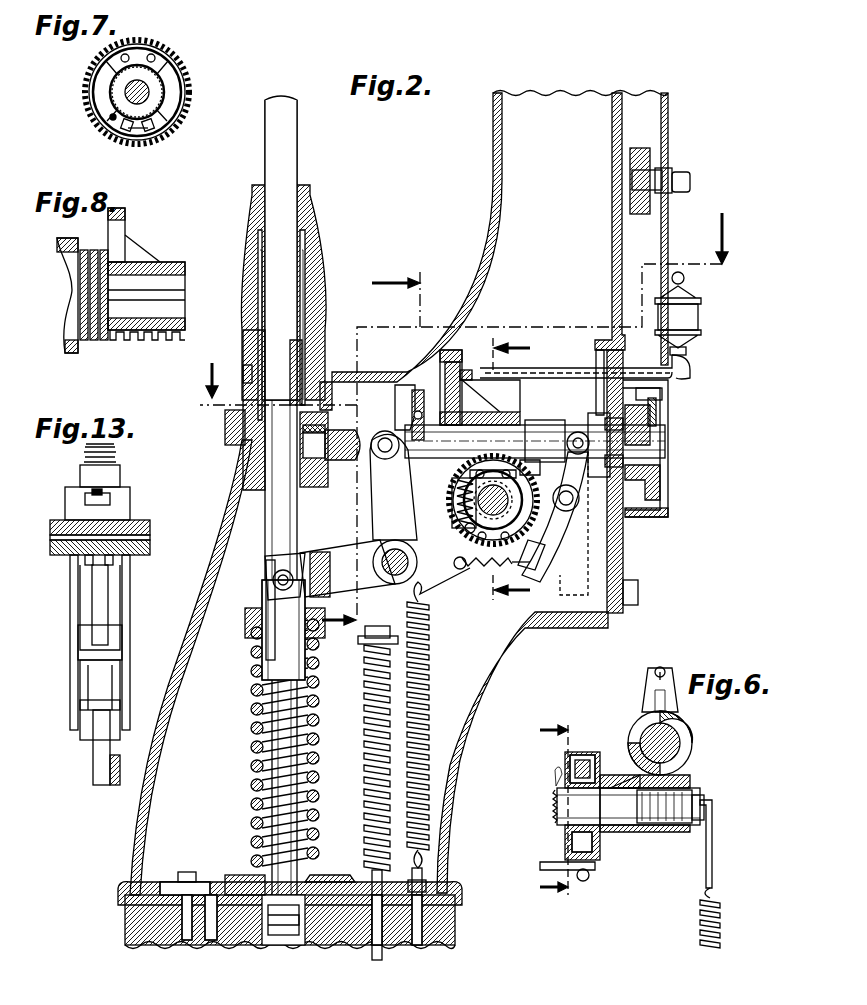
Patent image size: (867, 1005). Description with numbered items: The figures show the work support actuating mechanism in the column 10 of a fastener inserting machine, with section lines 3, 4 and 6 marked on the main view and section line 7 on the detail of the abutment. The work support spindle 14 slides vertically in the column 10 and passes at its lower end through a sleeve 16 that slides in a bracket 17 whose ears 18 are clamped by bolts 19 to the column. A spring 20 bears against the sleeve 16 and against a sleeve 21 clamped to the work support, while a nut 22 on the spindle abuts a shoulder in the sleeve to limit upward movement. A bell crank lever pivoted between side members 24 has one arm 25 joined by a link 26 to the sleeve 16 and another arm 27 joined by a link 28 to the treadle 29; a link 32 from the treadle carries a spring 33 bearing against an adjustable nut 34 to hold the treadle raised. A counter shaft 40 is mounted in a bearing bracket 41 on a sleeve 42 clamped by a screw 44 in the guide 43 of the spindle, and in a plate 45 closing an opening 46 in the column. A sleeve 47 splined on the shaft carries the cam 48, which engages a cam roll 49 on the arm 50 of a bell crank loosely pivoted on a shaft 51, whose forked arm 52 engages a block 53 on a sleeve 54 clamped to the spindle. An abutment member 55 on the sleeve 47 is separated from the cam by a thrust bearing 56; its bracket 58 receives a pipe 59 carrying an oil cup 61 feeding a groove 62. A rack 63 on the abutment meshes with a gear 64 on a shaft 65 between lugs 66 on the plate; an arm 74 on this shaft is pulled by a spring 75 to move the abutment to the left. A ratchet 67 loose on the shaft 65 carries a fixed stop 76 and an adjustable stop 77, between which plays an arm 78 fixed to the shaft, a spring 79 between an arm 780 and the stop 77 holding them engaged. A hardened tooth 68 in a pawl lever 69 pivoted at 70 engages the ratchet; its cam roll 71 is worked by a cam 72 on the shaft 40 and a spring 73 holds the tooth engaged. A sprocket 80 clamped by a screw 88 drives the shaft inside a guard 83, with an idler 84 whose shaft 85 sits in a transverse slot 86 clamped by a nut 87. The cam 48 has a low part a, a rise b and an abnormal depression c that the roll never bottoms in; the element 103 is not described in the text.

In FIG. 2, the section line 3— 3 is at (464, 298).
In FIG. 2, the section line 4— 4 is at (371, 448).
In FIG. 2, the section line 6— 6 is at (519, 472).
In FIG. 6, the section line 7— 7 is at (544, 810).
In FIG. 2, the column 10 is at (494, 251).
In FIG. 13, the work support spindle 14 is at (108, 447).
In FIG. 2, the work support spindle 14 is at (297, 135).
In FIG. 13, the sleeve 16 is at (118, 477).
In FIG. 2, the sleeve 16 is at (240, 882).
In FIG. 2, the bracket 17 is at (325, 880).
In FIG. 13, the ears 18 is at (97, 504).
In FIG. 2, the ears 18 is at (175, 880).
In FIG. 13, the bolts 19 is at (88, 565).
In FIG. 2, the bolts 19 is at (185, 870).
In FIG. 13, the spring 20 is at (85, 462).
In FIG. 2, the spring 20 is at (252, 740).
In FIG. 2, the sleeve 21 is at (250, 623).
In FIG. 2, the nut 22 is at (288, 935).
In FIG. 13, the side members 24 is at (128, 620).
In FIG. 13, the arm 25 is at (92, 670).
In FIG. 13, the link 26 is at (95, 608).
In FIG. 13, the arm 27 is at (82, 740).
In FIG. 13, the link 28 is at (96, 768).
In FIG. 13, the treadle 29 is at (114, 785).
In FIG. 2, the link 32 is at (385, 952).
In FIG. 2, the spring 33 is at (365, 740).
In FIG. 2, the adjustable nut 34 is at (380, 626).
In FIG. 2, the counter shaft 40 is at (560, 425).
In FIG. 6, the counter shaft 40 is at (692, 743).
In FIG. 2, the bearing bracket 41 is at (312, 487).
In FIG. 2, the sleeve 42 is at (262, 316).
In FIG. 2, the guide 43 is at (325, 240).
In FIG. 2, the screw 44 is at (244, 372).
In FIG. 2, the plate 45 is at (625, 553).
In FIG. 2, the opening 46 is at (600, 383).
In FIG. 2, the sleeve 47 is at (525, 425).
In FIG. 6, the sleeve 47 is at (690, 768).
In FIG. 8, the prime actuator or cam 48 is at (72, 240).
In FIG. 2, the prime actuator or cam 48 is at (408, 385).
In FIG. 2, the cam roll 49 is at (385, 432).
In FIG. 2, the arm 50 is at (393, 487).
In FIG. 2, the shaft 51 is at (385, 570).
In FIG. 2, the forked arm 52 is at (330, 570).
In FIG. 2, the block 53 is at (268, 578).
In FIG. 2, the sleeve 54 is at (268, 598).
In FIG. 8, the abutment member 55 is at (160, 262).
In FIG. 2, the abutment member 55 is at (495, 412).
In FIG. 6, the abutment member 55 is at (640, 735).
In FIG. 8, the thrust bearing 56 is at (90, 340).
In FIG. 2, the thrust bearing 56 is at (418, 390).
In FIG. 8, the arm or bracket 58 is at (128, 225).
In FIG. 2, the arm or bracket 58 is at (455, 370).
In FIG. 6, the arm or bracket 58 is at (655, 668).
In FIG. 2, the rod or pipe 59 is at (575, 367).
In FIG. 6, the rod or pipe 59 is at (668, 670).
In FIG. 2, the oil cup 61 is at (678, 313).
In FIG. 2, the groove 62 is at (475, 360).
In FIG. 8, the rack 63 is at (150, 340).
In FIG. 6, the rack 63 is at (645, 768).
In FIG. 2, the gear 64 is at (530, 468).
In FIG. 6, the gear 64 is at (675, 815).
In FIG. 7, the shaft 65 is at (150, 98).
In FIG. 2, the shaft 65 is at (510, 498).
In FIG. 6, the shaft 65 is at (570, 806).
In FIG. 2, the lugs 66 is at (580, 520).
In FIG. 6, the lugs 66 is at (648, 825).
In FIG. 7, the ratchet 67 is at (180, 70).
In FIG. 2, the ratchet 67 is at (455, 525).
In FIG. 6, the ratchet 67 is at (590, 752).
In FIG. 2, the hardened tooth 68 is at (540, 560).
In FIG. 2, the pawl lever 69 is at (563, 510).
In FIG. 2, the pivot 70 is at (578, 490).
In FIG. 2, the cam roll 71 is at (565, 443).
In FIG. 2, the cam 72 is at (610, 425).
In FIG. 2, the spring 73 is at (522, 572).
In FIG. 6, the spring 73 is at (583, 882).
In FIG. 2, the arm 74 is at (445, 590).
In FIG. 6, the arm 74 is at (712, 850).
In FIG. 2, the spring 75 is at (430, 718).
In FIG. 6, the spring 75 is at (722, 920).
In FIG. 7, the fixed stop 76 is at (150, 55).
In FIG. 2, the fixed stop 76 is at (515, 460).
In FIG. 6, the fixed stop 76 is at (582, 752).
In FIG. 7, the circumferentially adjustable stop 77 is at (145, 135).
In FIG. 2, the circumferentially adjustable stop 77 is at (478, 570).
In FIG. 6, the circumferentially adjustable stop 77 is at (598, 852).
In FIG. 7, the arm 78 is at (100, 97).
In FIG. 2, the arm 78 is at (470, 470).
In FIG. 6, the arm 78 is at (570, 832).
In FIG. 2, the spring 79 is at (455, 505).
In FIG. 6, the spring 79 is at (555, 782).
In FIG. 2, the sprocket 80 is at (648, 488).
In FIG. 2, the guard 83 is at (668, 425).
In FIG. 2, the idler 84 is at (636, 148).
In FIG. 2, the shaft 85 is at (668, 172).
In FIG. 2, the transverse slot 86 is at (668, 200).
In FIG. 2, the nut 87 is at (690, 182).
In FIG. 2, the screw 88 is at (656, 408).
In FIG. 2, the flange 103 is at (226, 435).
In FIG. 2, the arm 780 is at (472, 462).
In FIG. 6, the arm 780 is at (560, 775).
In FIG. 8, the low part of the cam a is at (66, 346).
In FIG. 8, the cam rise b is at (60, 256).
In FIG. 8, the abnormal depression c is at (70, 297).